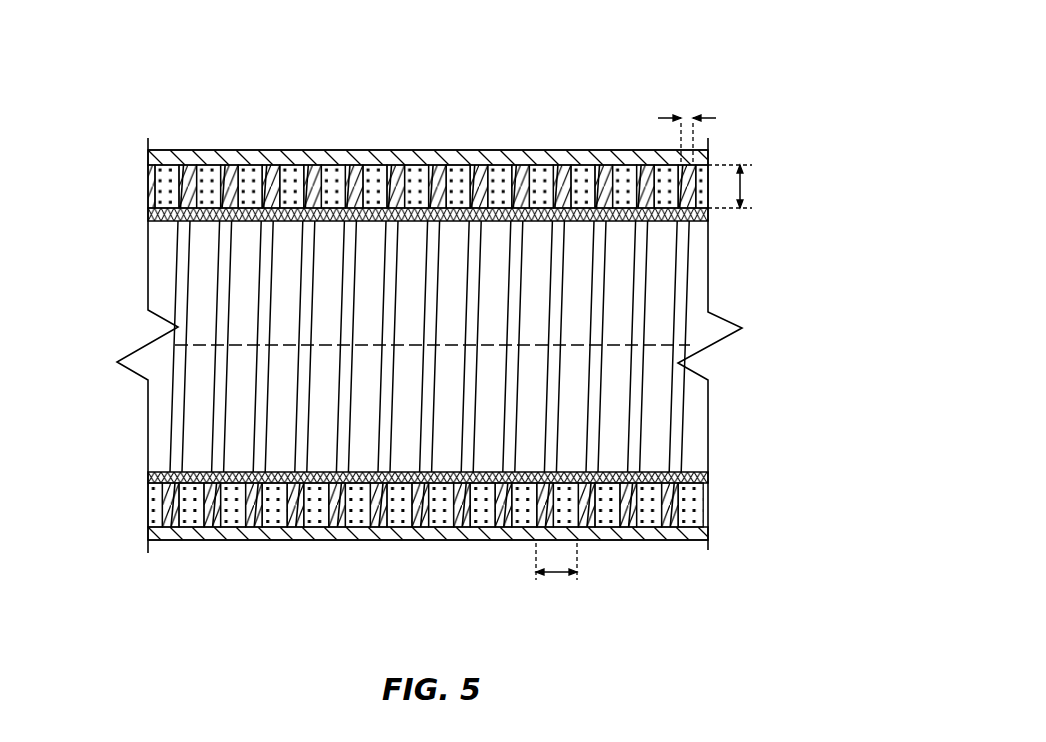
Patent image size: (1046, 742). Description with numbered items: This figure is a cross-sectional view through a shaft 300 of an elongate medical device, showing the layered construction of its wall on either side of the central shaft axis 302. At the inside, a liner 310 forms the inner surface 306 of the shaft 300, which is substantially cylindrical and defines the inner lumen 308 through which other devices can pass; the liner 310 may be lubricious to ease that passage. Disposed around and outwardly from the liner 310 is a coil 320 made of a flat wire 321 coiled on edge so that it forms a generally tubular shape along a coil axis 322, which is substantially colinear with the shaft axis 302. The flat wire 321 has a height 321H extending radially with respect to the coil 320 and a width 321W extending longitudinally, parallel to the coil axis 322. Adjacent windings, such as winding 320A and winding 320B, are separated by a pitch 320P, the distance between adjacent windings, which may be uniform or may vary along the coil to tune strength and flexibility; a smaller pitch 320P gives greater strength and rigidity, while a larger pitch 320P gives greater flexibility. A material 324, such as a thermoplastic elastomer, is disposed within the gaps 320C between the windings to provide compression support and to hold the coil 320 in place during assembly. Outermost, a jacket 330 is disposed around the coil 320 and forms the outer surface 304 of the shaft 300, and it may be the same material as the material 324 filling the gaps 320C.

The shaft 300 is at (326, 50).
The shaft axis 302 is at (202, 345).
The outer surface 304 is at (282, 158).
The inner surface 306 is at (650, 471).
The inner lumen 308 is at (657, 393).
The liner 310 is at (542, 205).
The coil 320 is at (442, 187).
The winding 320A is at (540, 500).
The winding 320B is at (585, 510).
The gaps 320C is at (357, 508).
The pitch 320P is at (556, 574).
The flat wire 321 is at (430, 189).
The width 321W is at (688, 116).
The height 321H is at (742, 186).
The coil axis 322 is at (245, 345).
The material 324 is at (621, 180).
The jacket 330 is at (218, 158).